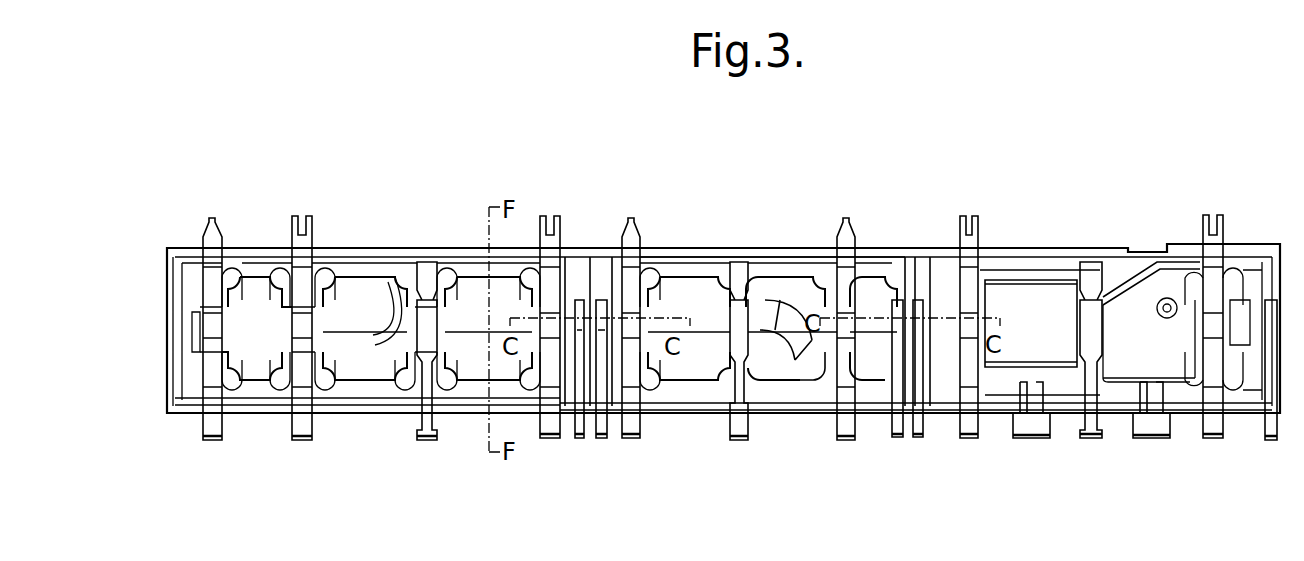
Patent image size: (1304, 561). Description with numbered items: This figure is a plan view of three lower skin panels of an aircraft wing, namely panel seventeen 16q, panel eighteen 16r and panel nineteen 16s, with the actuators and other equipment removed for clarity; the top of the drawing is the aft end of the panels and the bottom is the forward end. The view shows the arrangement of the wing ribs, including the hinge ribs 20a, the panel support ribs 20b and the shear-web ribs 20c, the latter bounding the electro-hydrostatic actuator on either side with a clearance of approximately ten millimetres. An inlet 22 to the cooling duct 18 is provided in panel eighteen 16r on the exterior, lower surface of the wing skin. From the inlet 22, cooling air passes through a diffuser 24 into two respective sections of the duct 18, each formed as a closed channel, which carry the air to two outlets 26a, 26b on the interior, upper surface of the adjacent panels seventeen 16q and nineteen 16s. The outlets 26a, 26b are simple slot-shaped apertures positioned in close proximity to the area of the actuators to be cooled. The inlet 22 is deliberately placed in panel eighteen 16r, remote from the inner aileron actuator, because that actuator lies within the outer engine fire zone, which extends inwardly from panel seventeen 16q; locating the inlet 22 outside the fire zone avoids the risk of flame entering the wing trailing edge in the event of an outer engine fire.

The panel seventeen 16q is at (253, 232).
The panel eighteen 16r is at (743, 234).
The panel nineteen 16s is at (1150, 232).
The cooling duct 18 is at (681, 318).
The hinge ribs 20a is at (293, 440).
The panel support ribs 20b is at (425, 440).
The shear-web rib 20c is at (733, 423).
The inlet 22 is at (796, 364).
The diffuser 24 is at (777, 352).
The outlet 26a is at (935, 318).
The outlet 26b is at (375, 282).